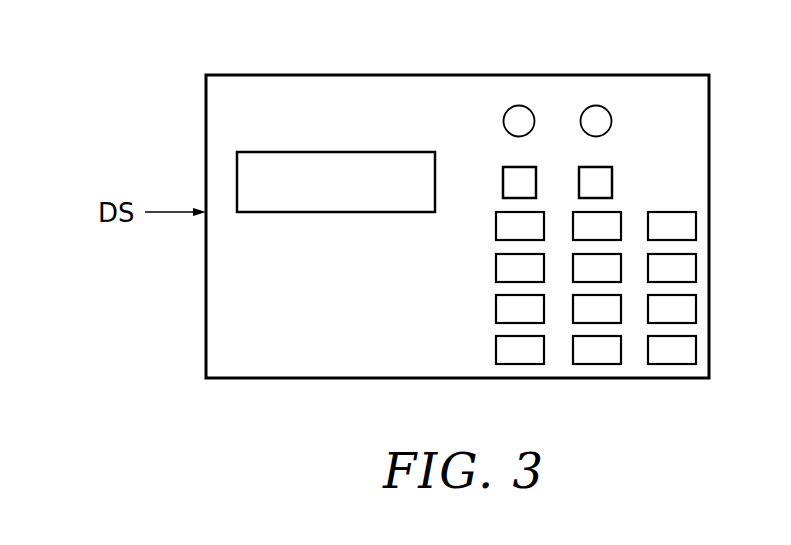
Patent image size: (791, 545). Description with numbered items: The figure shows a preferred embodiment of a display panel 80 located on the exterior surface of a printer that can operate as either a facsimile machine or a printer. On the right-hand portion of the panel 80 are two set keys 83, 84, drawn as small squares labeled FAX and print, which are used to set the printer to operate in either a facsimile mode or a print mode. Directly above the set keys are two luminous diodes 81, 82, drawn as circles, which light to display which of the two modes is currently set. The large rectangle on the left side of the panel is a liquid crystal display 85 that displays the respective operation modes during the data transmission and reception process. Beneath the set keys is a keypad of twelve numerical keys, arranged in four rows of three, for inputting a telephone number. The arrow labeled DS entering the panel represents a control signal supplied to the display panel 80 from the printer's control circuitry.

The display panel 80 is at (710, 227).
The luminous diode 81 is at (530, 120).
The luminous diode 82 is at (613, 119).
The set key 83 is at (595, 182).
The set key 84 is at (505, 170).
The liquid crystal display 85 is at (327, 152).